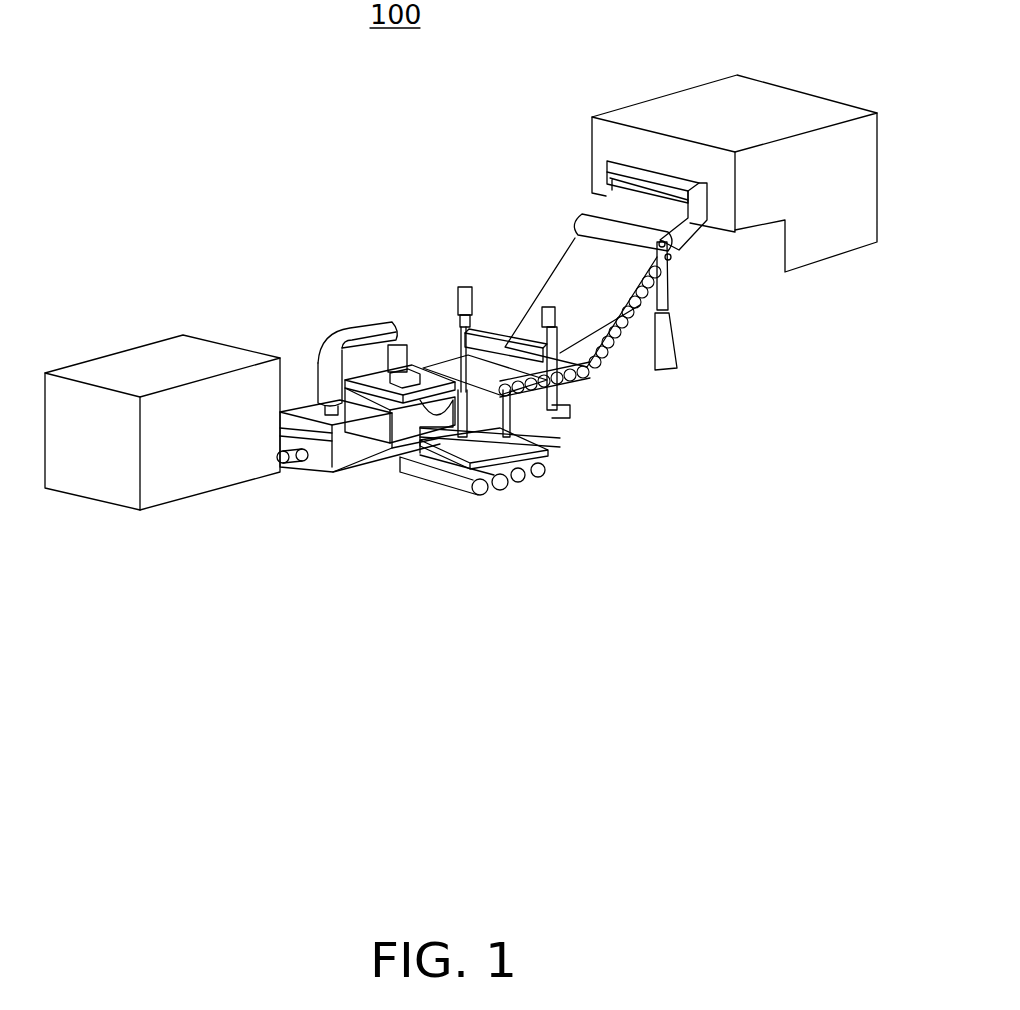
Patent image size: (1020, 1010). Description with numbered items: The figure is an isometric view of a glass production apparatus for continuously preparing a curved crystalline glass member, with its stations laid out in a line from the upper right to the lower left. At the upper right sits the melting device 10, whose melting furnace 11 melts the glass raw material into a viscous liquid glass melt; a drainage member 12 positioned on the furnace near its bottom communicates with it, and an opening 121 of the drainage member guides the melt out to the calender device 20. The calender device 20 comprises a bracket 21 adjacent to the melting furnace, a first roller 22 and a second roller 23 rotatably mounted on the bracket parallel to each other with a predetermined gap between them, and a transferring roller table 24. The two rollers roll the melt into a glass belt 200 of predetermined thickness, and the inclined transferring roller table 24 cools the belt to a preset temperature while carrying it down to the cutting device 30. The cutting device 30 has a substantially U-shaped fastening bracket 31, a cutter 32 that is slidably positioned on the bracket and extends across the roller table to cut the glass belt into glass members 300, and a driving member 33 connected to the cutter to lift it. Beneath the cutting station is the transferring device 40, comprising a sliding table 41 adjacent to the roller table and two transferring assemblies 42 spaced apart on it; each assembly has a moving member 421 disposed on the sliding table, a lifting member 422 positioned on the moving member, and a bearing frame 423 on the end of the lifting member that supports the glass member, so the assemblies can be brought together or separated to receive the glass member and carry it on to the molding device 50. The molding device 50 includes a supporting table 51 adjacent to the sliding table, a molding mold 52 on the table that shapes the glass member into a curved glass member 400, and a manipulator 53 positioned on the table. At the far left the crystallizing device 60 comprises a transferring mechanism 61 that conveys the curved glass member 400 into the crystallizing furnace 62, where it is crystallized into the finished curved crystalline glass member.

The melting device 10 is at (787, 40).
The melting furnace 11 is at (795, 108).
The drainage member 12 is at (698, 197).
The opening 121 is at (599, 178).
The calender device 20 is at (787, 283).
The bracket 21 is at (668, 293).
The first roller 22 is at (675, 258).
The second roller 23 is at (668, 247).
The transferring roller table 24 is at (672, 327).
The glass belt 200 is at (590, 253).
The glass member 300 is at (523, 375).
The cutting device 30 is at (455, 200).
The fastening bracket 31 is at (410, 360).
The cutter 32 is at (507, 347).
The driving member 33 is at (468, 290).
The transferring device 40 is at (695, 472).
The sliding table 41 is at (527, 480).
The transferring assembly 42 is at (647, 430).
The moving member 421 is at (547, 467).
The lifting member 422 is at (510, 422).
The bearing frame 423 is at (513, 418).
The curved glass member 400 is at (420, 453).
The molding device 50 is at (250, 250).
The supporting table 51 is at (345, 428).
The molding mold 52 is at (332, 353).
The manipulator 53 is at (380, 380).
The crystallizing device 60 is at (337, 518).
The transferring mechanism 61 is at (302, 462).
The crystallizing furnace 62 is at (225, 475).